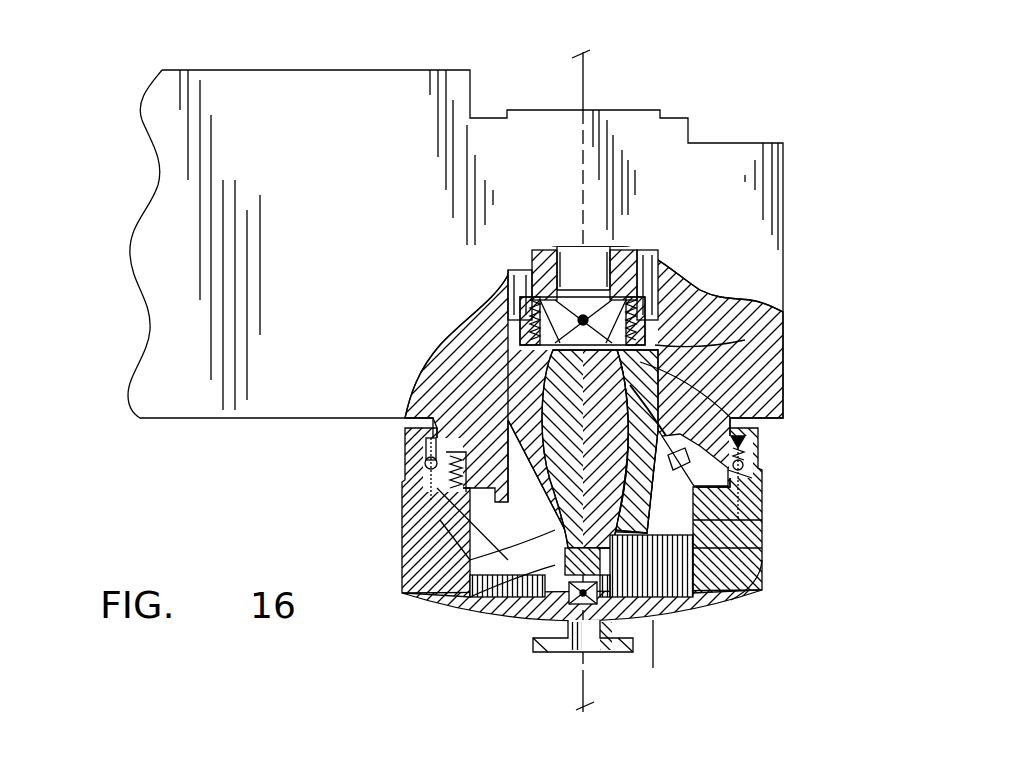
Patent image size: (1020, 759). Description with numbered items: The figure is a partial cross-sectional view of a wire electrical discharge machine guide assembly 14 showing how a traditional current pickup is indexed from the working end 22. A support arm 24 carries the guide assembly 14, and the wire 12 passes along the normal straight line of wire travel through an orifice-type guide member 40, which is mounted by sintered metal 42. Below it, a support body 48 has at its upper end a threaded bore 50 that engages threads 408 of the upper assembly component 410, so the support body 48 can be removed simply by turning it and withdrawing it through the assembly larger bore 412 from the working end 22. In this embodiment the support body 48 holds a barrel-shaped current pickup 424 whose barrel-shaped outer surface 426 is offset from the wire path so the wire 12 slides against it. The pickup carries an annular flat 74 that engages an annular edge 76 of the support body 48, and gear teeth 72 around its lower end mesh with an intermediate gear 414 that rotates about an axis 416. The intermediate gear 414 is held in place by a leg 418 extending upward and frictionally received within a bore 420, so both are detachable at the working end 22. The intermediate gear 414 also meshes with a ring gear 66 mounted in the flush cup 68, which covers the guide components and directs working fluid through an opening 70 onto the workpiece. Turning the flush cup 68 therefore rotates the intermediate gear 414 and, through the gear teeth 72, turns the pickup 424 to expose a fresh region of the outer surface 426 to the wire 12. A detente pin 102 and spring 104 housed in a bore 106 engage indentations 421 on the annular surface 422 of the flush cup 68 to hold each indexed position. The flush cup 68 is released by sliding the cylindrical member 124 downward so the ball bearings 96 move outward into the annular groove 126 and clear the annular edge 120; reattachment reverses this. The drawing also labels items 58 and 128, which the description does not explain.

The wire 12 is at (584, 84).
The guide assembly 14 is at (752, 113).
The working end 22 is at (822, 578).
The support arm 24 is at (402, 204).
The orifice-type guide member 40 is at (540, 310).
The sintered metal 42 is at (515, 305).
The support body 48 is at (748, 352).
The threaded bore 50 is at (655, 297).
The seal 58 is at (545, 618).
The ring gear 66 is at (495, 613).
The flush cup 68 is at (745, 440).
The opening 70 is at (582, 652).
The gear teeth 72 is at (540, 608).
The annular flat 74 is at (487, 603).
The annular edge 76 is at (445, 595).
The ball bearings 96 is at (760, 468).
The detente pin 102 is at (433, 473).
The spring 104 is at (436, 470).
The bore 106 is at (430, 447).
The annular edge 120 is at (762, 483).
The cylindrical member 124 is at (762, 562).
The annular groove 126 is at (755, 450).
The o-ring 128 is at (765, 522).
The threads 408 is at (770, 300).
The upper assembly component 410 is at (622, 250).
The assembly larger bore 412 is at (760, 327).
The intermediate gear 414 is at (752, 590).
The axis 416 is at (653, 638).
The leg 418 is at (740, 520).
The bore 420 is at (765, 411).
The indentations 421 is at (445, 515).
The annular surface 422 is at (740, 478).
The barrel-shaped current pickup 424 is at (762, 392).
The barrel-shaped outer surface 426 is at (760, 373).